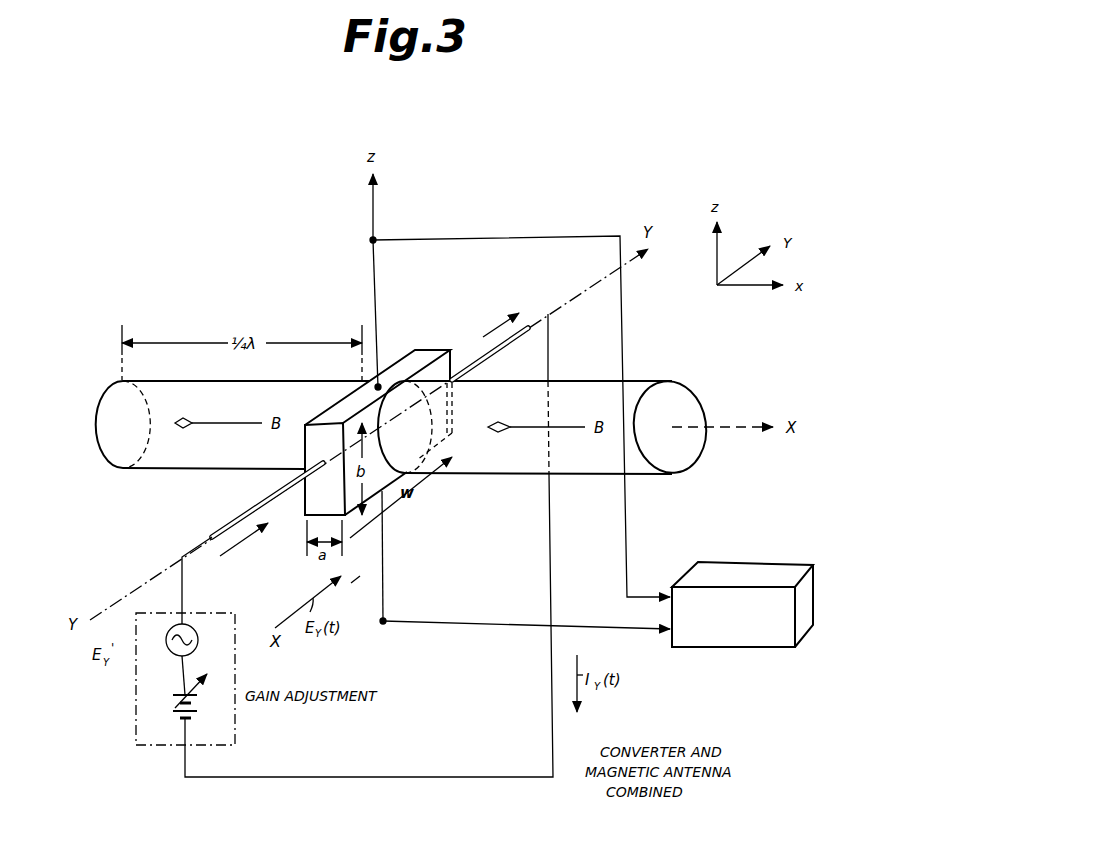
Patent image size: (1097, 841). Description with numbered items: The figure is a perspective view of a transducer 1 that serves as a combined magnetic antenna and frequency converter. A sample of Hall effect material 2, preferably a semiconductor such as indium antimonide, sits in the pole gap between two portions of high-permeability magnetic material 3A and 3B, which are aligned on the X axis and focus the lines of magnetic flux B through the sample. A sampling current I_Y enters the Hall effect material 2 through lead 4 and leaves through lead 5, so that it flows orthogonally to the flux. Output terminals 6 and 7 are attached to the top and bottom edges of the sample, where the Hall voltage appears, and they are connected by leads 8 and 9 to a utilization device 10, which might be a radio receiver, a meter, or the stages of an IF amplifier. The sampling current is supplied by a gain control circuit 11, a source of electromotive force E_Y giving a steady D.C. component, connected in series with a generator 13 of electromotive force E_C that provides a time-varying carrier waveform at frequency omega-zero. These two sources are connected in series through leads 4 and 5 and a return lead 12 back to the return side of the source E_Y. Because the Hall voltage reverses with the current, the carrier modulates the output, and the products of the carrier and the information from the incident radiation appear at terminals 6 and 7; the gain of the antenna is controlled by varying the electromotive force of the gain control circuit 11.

The transducer 1 is at (353, 274).
The Hall effect material 2 is at (411, 360).
The bar of high permeability material 3A is at (647, 384).
The bar of high permeability material 3B is at (187, 469).
The lead 4 is at (258, 505).
The lead 5 is at (499, 344).
The terminal 6 is at (380, 288).
The terminal 7 is at (384, 535).
The lead 8 is at (562, 235).
The lead 9 is at (600, 629).
The utilization device 10 is at (740, 647).
The gain control circuit 11 is at (176, 705).
The return lead 12 is at (446, 777).
The generator 13 is at (166, 638).